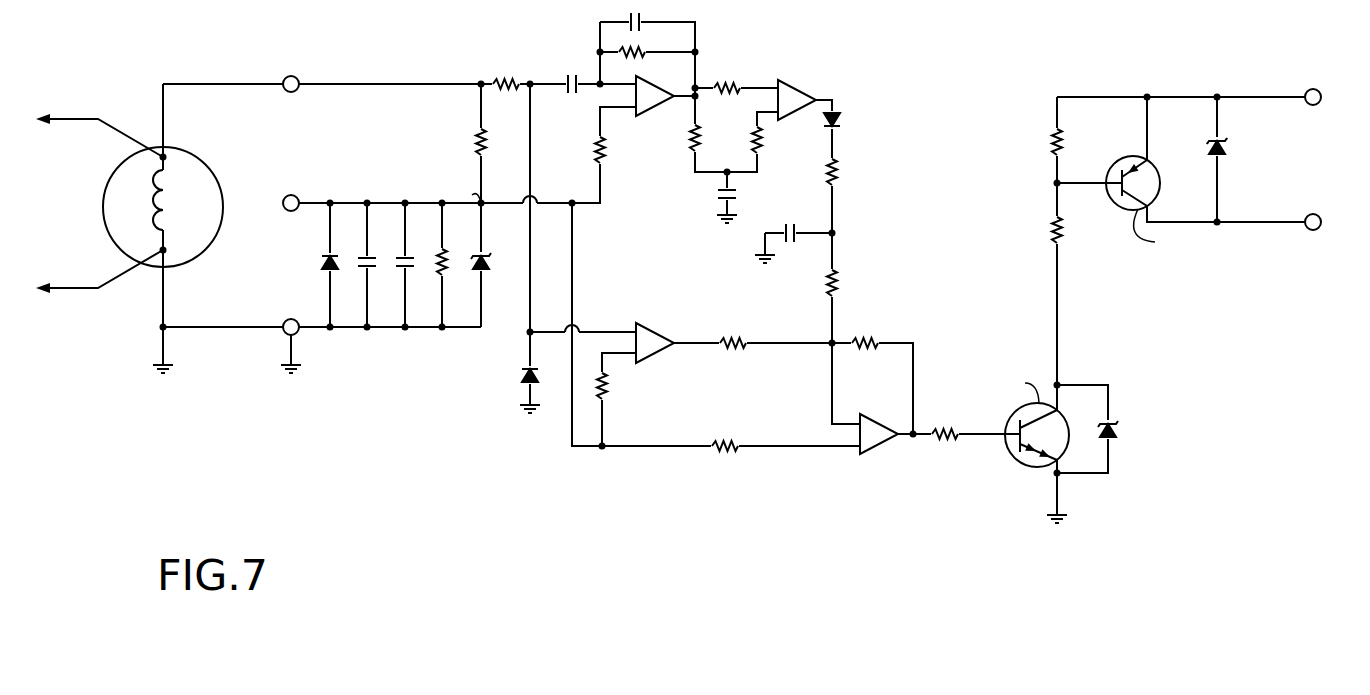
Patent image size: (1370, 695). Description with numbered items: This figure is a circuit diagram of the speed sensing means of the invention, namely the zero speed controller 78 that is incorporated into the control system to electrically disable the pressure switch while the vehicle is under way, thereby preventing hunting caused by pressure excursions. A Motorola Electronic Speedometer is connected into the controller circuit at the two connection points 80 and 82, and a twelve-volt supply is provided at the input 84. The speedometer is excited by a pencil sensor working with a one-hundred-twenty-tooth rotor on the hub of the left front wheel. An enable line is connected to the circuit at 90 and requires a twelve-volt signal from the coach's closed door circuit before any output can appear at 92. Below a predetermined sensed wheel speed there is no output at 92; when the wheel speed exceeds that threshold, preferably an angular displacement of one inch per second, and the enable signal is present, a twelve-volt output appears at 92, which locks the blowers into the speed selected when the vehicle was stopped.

The zero speed controller 78 is at (462, 421).
The speedometer connection point 80 is at (297, 78).
The speedometer connection point 82 is at (297, 333).
The 12 V input 84 is at (297, 197).
The enable line connection 90 is at (1319, 91).
The output 92 is at (1326, 205).